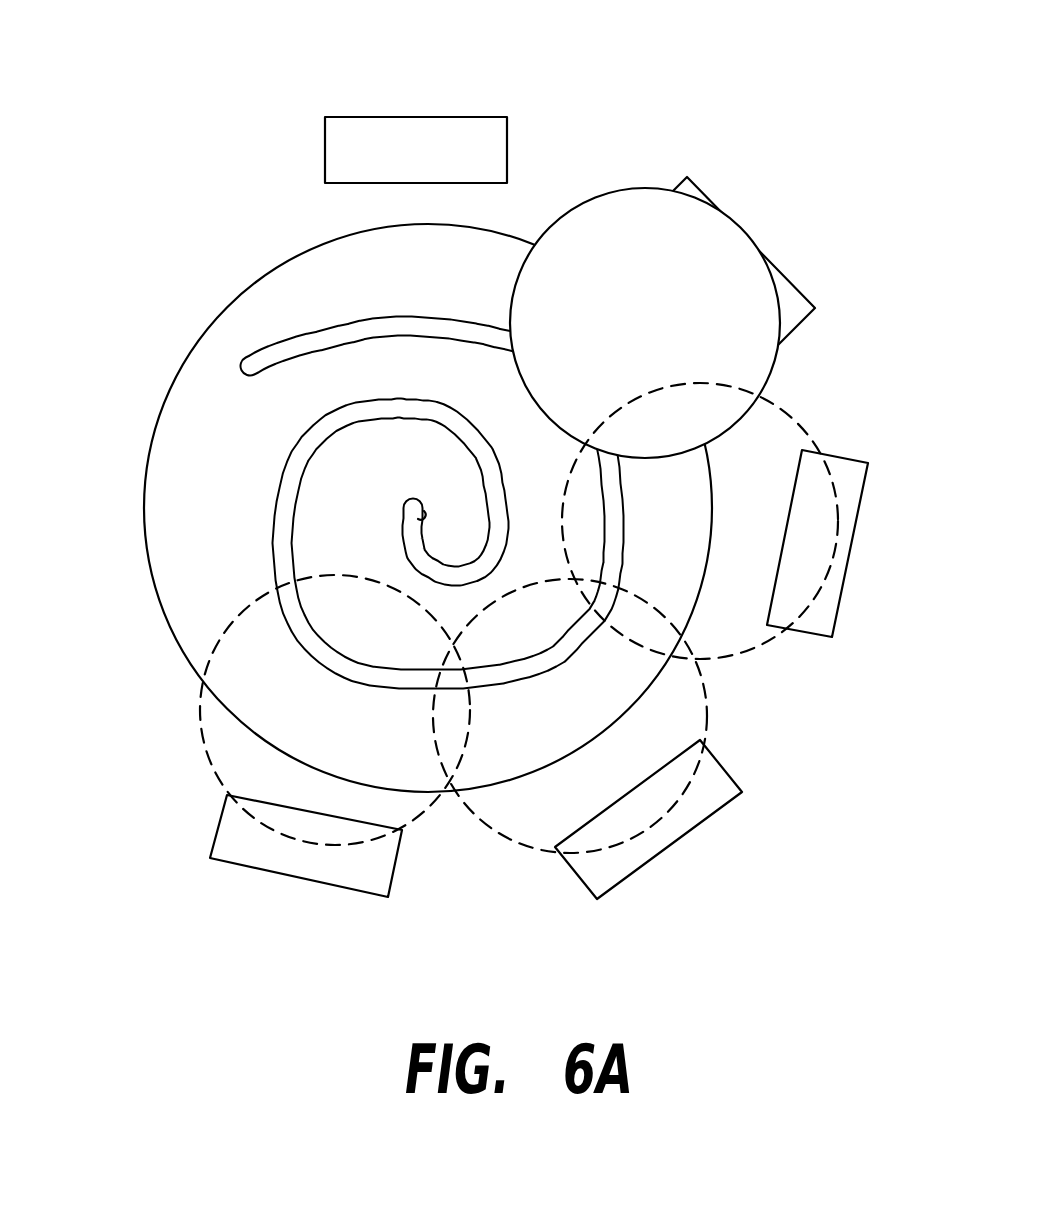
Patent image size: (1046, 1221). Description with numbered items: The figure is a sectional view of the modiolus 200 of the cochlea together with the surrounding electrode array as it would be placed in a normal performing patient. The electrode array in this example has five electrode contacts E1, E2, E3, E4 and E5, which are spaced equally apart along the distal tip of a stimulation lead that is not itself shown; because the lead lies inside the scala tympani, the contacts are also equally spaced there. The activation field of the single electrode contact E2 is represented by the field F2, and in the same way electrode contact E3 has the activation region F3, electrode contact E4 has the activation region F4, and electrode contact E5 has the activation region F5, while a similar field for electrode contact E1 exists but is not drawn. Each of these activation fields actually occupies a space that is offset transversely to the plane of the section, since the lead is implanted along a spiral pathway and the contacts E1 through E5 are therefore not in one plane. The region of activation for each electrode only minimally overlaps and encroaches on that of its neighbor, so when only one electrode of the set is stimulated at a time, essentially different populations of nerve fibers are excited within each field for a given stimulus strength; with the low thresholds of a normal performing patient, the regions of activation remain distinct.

The modiolus 200 is at (210, 327).
The electrode contact E1 is at (415, 117).
The electrode contact E2 is at (797, 287).
The electrode contact E3 is at (847, 552).
The electrode contact E4 is at (668, 843).
The electrode contact E5 is at (300, 877).
The activation field F2 is at (642, 188).
The activation region F3 is at (793, 418).
The activation region F4 is at (703, 693).
The activation region F5 is at (197, 707).